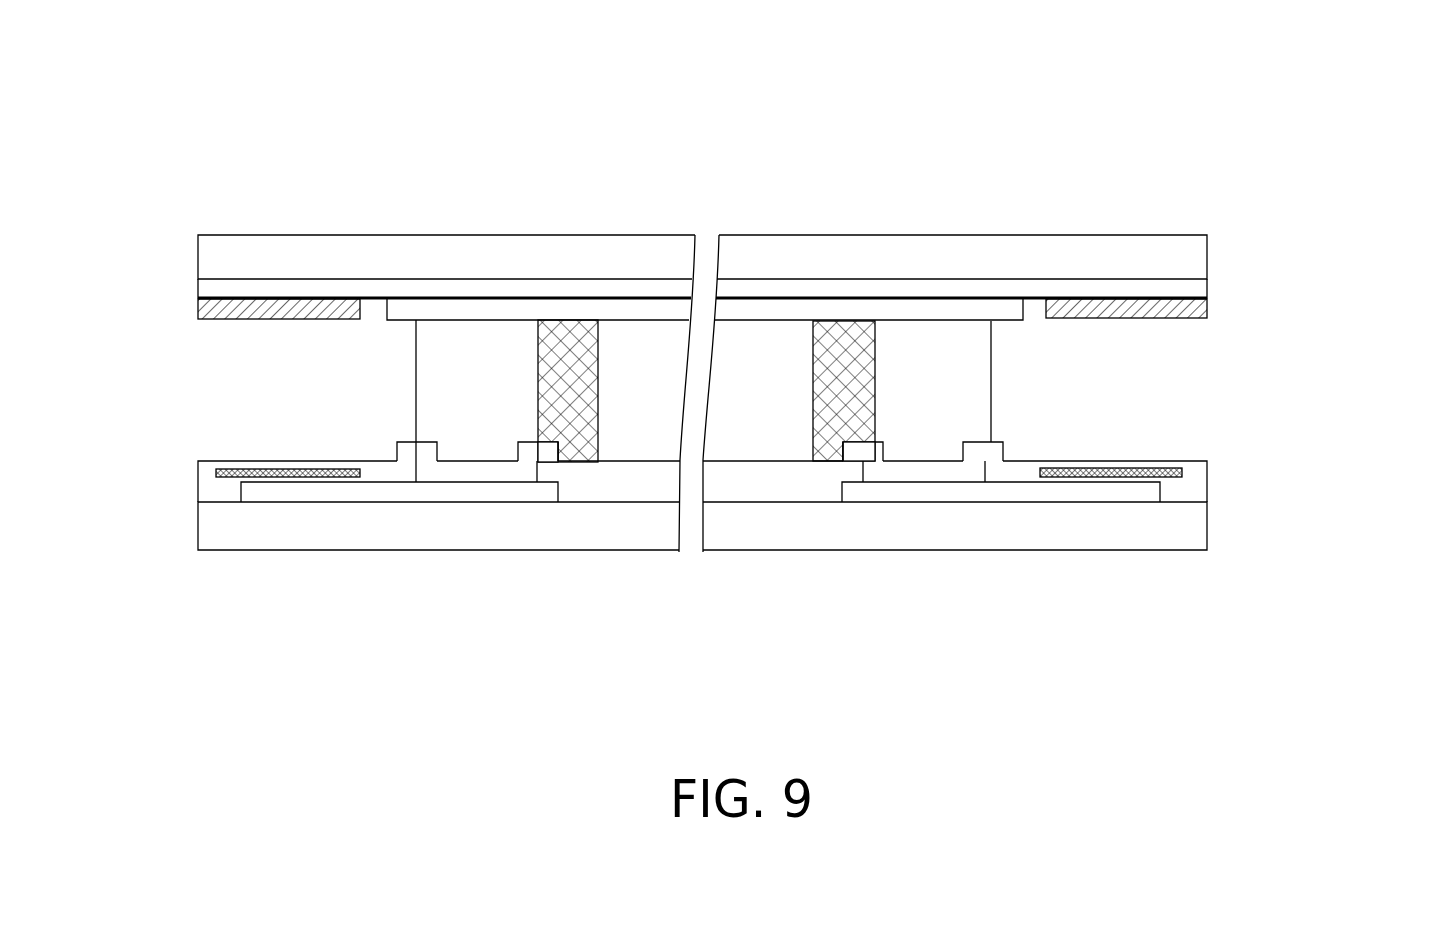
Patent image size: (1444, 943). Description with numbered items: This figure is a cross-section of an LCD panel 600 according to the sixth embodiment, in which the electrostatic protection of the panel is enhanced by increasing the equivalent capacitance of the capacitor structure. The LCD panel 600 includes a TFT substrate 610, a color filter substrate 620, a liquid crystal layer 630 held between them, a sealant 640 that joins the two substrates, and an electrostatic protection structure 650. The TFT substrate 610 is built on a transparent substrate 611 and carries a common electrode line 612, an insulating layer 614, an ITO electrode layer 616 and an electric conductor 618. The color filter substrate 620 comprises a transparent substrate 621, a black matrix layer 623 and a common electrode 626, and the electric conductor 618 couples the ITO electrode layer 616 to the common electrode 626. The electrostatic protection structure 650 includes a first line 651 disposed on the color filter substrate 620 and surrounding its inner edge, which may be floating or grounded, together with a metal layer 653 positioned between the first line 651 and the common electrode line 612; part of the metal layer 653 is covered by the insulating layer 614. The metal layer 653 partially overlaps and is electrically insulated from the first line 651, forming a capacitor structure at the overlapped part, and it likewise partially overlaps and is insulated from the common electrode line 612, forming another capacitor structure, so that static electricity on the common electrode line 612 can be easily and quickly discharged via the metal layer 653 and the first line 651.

The LCD panel 600 is at (1353, 80).
The TFT substrate 610 is at (712, 548).
The transparent substrate 611 is at (1177, 538).
The common electrode line 612 is at (948, 495).
The insulating layer 614 is at (1192, 488).
The ITO electrode layer 616 is at (873, 472).
The electric conductor 618 is at (958, 385).
The color filter substrate 620 is at (700, 230).
The transparent substrate 621 is at (1165, 248).
The black matrix layer 623 is at (1185, 287).
The common electrode 626 is at (993, 310).
The liquid crystal layer 630 is at (758, 338).
The sealant 640 is at (848, 337).
The electrostatic protection structure 650 is at (812, 388).
The first line 651 is at (1207, 305).
The metal layer 653 is at (1190, 460).